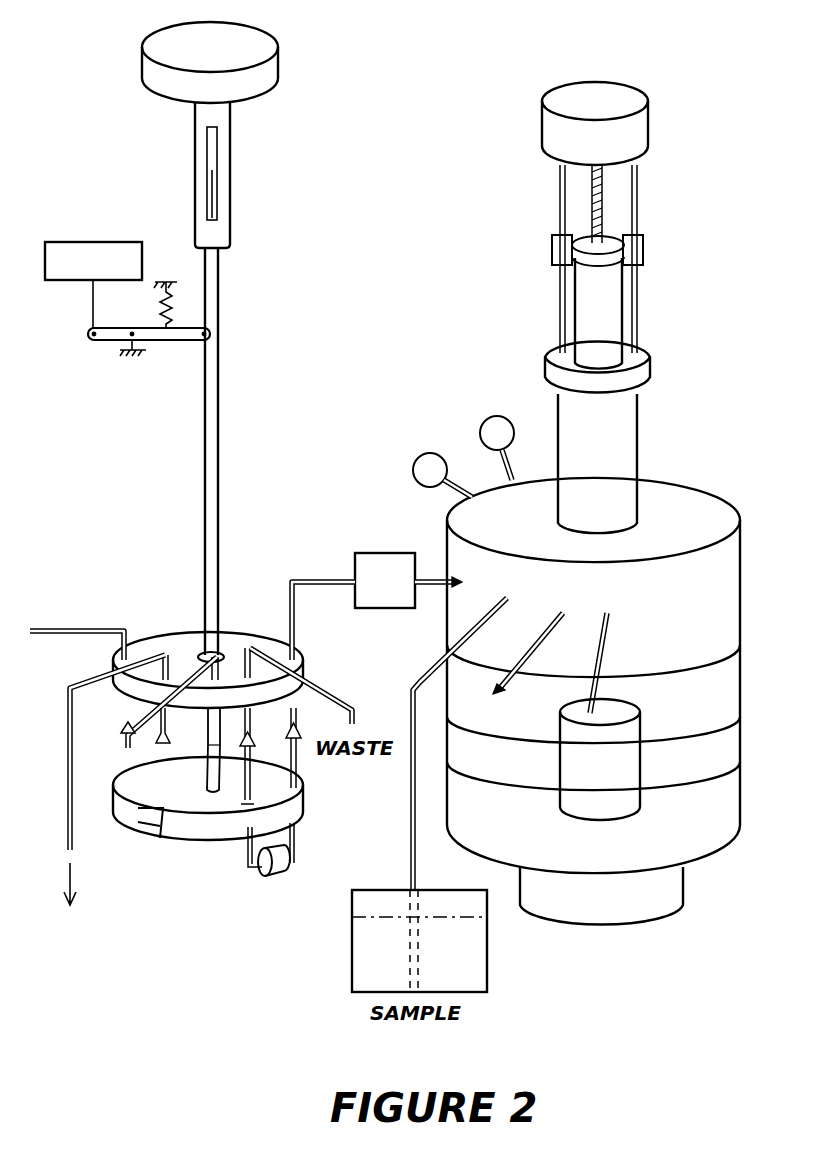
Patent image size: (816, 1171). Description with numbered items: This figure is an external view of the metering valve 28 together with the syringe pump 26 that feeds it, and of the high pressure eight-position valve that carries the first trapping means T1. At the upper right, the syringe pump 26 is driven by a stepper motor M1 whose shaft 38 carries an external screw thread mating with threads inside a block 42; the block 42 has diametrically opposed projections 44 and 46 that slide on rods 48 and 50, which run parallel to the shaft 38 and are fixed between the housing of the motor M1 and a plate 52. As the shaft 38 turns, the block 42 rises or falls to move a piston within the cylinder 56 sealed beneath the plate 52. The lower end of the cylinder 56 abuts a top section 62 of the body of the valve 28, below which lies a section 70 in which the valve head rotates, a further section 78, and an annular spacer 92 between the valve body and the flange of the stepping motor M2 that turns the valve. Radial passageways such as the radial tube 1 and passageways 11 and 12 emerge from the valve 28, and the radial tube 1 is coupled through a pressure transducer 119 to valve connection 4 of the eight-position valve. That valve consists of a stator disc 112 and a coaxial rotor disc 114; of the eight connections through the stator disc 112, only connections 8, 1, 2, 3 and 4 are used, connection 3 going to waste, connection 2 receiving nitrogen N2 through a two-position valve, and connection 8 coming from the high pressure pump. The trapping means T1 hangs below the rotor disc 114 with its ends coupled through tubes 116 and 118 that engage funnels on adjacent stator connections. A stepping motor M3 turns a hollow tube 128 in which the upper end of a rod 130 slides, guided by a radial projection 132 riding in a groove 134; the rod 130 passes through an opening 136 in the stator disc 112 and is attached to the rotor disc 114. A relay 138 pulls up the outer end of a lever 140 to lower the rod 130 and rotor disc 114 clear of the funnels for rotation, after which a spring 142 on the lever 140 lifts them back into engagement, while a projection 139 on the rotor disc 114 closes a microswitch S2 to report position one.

The stepping motor M3 is at (283, 40).
The hollow tube 128 is at (231, 133).
The radial projection 132 is at (215, 162).
The groove 134 is at (214, 214).
The rod 130 is at (219, 425).
The relay 138 is at (118, 242).
The spring 142 is at (164, 308).
The lever 140 is at (110, 348).
The opening 136 is at (200, 652).
The stator disc 112 is at (232, 628).
The rotor disc 114 is at (214, 844).
The tube 116 is at (228, 804).
The tube 118 is at (291, 746).
The projection 139 is at (140, 840).
The pressure transducer 119 is at (378, 553).
The valve connection 8 is at (77, 645).
The valve connection 1 is at (471, 576).
The valve connection 2 is at (471, 740).
The valve connection 3 is at (540, 643).
The valve connection 4 is at (462, 647).
The radial passageway 11 is at (517, 503).
The radial passageway 12 is at (484, 518).
The nitrogen N2 is at (165, 720).
The first trapping means T1 is at (272, 869).
The syringe pump 26 is at (698, 209).
The stepper motor M1 is at (650, 130).
The rod 48 is at (558, 198).
The rod 50 is at (640, 180).
The shaft 38 is at (616, 210).
The projection 44 is at (551, 240).
The projection 46 is at (644, 236).
The block 42 is at (600, 280).
The plate 52 is at (655, 365).
The cylinder 56 is at (640, 455).
The valve 28 is at (724, 482).
The top section 62 is at (742, 562).
The section 70 is at (742, 670).
The chamber section 78 is at (742, 742).
The annular spacer 92 is at (742, 798).
The stepping motor M2 is at (686, 880).
The microswitch S2 is at (463, 456).